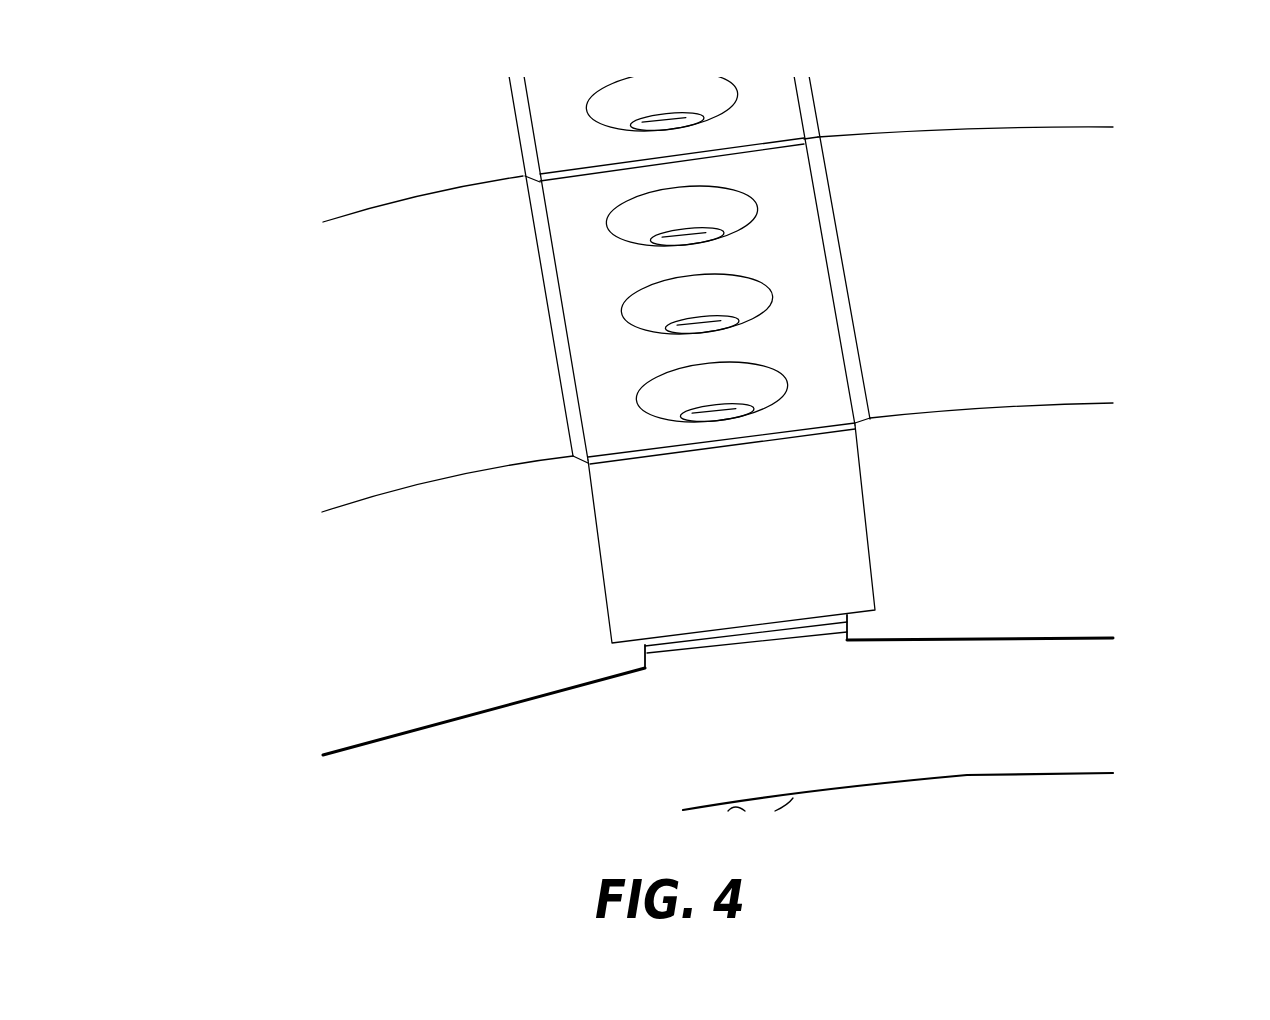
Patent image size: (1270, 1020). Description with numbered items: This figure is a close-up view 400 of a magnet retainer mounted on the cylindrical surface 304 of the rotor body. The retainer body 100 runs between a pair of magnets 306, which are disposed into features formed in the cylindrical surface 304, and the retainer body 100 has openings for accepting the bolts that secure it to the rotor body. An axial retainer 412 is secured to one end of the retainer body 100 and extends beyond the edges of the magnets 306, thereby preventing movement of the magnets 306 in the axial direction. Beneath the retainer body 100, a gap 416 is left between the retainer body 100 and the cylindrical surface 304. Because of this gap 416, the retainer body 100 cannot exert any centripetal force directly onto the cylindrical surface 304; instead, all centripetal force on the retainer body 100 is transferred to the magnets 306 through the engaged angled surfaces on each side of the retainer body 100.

The close-up view 400 is at (270, 155).
The retainer body 100 is at (790, 240).
The axial retainer 412 is at (770, 515).
The magnets 306 is at (453, 582).
The gap 416 is at (643, 648).
The cylindrical surface 304 is at (957, 640).